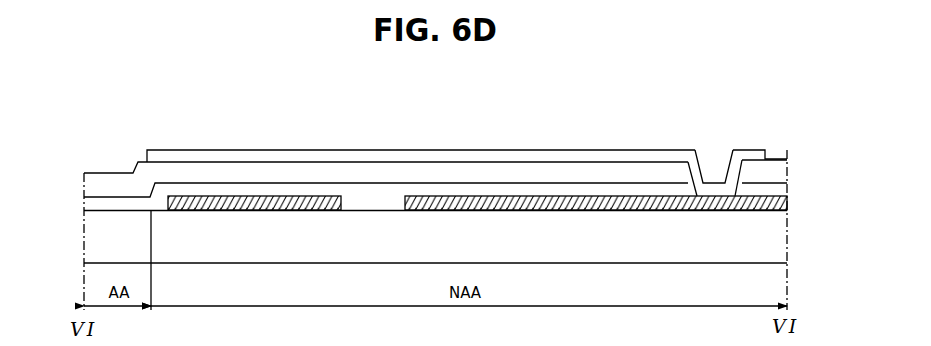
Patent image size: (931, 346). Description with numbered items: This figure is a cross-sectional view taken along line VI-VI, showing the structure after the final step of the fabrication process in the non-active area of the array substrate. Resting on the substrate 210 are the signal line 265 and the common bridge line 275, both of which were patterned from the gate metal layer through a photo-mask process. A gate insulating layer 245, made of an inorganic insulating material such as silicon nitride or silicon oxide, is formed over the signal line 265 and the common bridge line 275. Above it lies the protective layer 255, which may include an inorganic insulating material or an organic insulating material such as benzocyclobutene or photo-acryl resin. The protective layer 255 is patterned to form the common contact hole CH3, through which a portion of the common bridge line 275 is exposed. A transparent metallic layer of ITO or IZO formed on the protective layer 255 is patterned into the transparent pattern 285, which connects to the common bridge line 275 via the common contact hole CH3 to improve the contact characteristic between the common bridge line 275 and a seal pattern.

The substrate 210 is at (772, 243).
The gate insulating layer 245 is at (533, 190).
The protective layer 255 is at (232, 172).
The signal line 265 is at (250, 207).
The common bridge line 275 is at (560, 209).
The transparent pattern 285 is at (381, 155).
The common contact hole CH3 is at (716, 147).